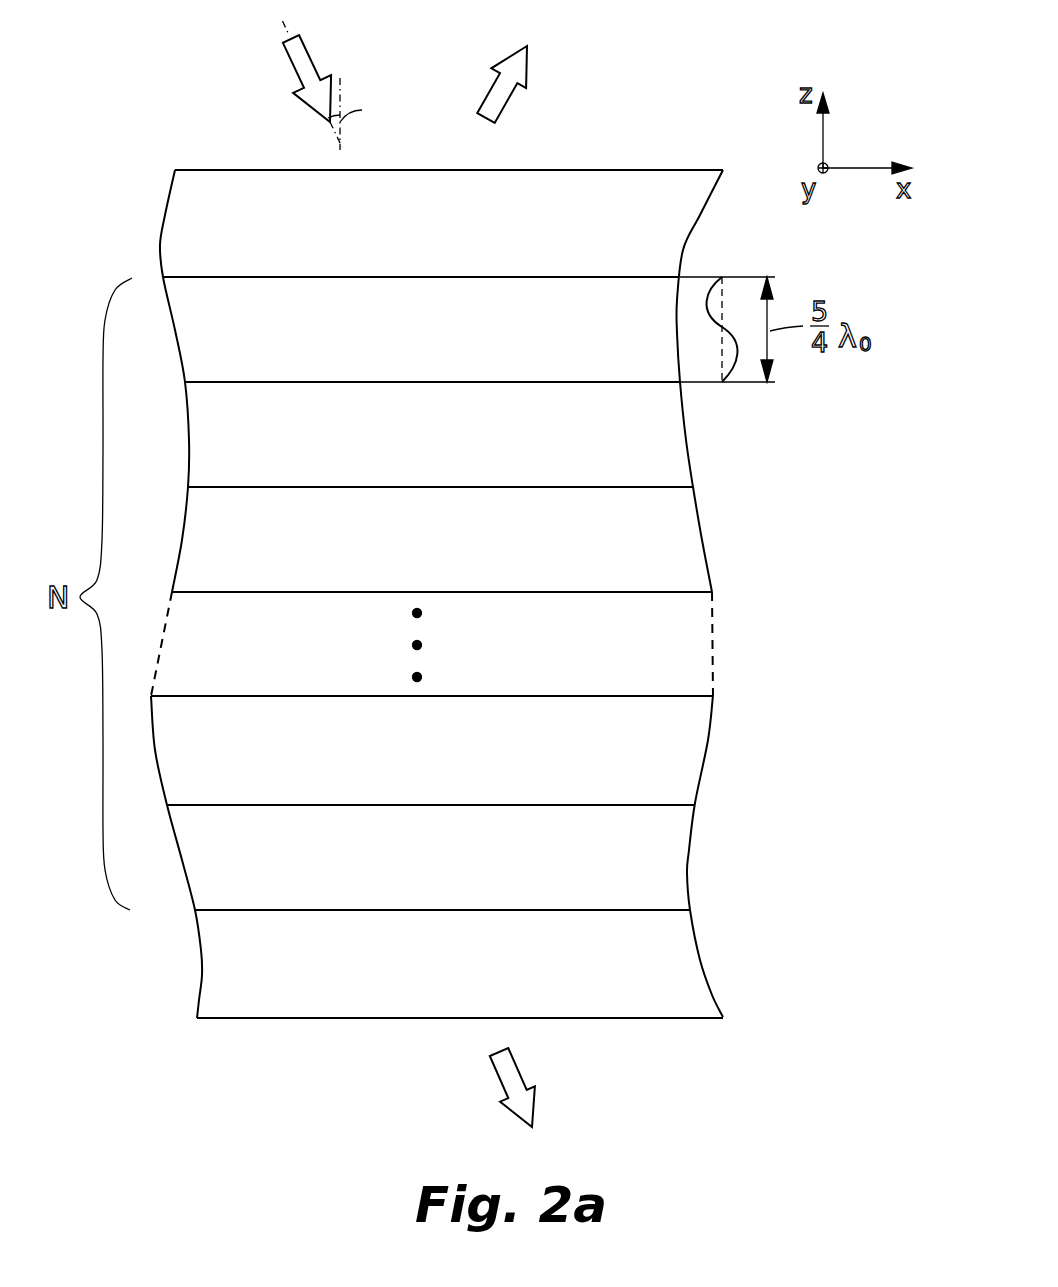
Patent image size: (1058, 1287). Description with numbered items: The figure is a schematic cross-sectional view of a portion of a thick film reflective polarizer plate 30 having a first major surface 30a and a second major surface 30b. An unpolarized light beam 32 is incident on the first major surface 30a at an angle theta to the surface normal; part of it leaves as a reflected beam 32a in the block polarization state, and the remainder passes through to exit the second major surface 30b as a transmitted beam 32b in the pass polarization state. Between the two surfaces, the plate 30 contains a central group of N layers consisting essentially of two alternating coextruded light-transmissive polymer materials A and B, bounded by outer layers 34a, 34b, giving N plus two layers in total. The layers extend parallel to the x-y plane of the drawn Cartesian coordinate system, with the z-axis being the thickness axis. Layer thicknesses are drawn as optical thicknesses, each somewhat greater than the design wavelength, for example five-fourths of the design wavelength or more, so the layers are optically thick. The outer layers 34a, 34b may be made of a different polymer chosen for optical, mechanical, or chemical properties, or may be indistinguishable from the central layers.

The thick film reflective polarizer plate 30 is at (395, 580).
The first major surface 30a is at (628, 160).
The second major surface 30b is at (268, 1030).
The unpolarized light beam 32 is at (291, 66).
The reflected beam 32a is at (511, 97).
The transmitted beam 32b is at (520, 1070).
The outer layer 34a is at (453, 243).
The outer layer 34b is at (485, 988).